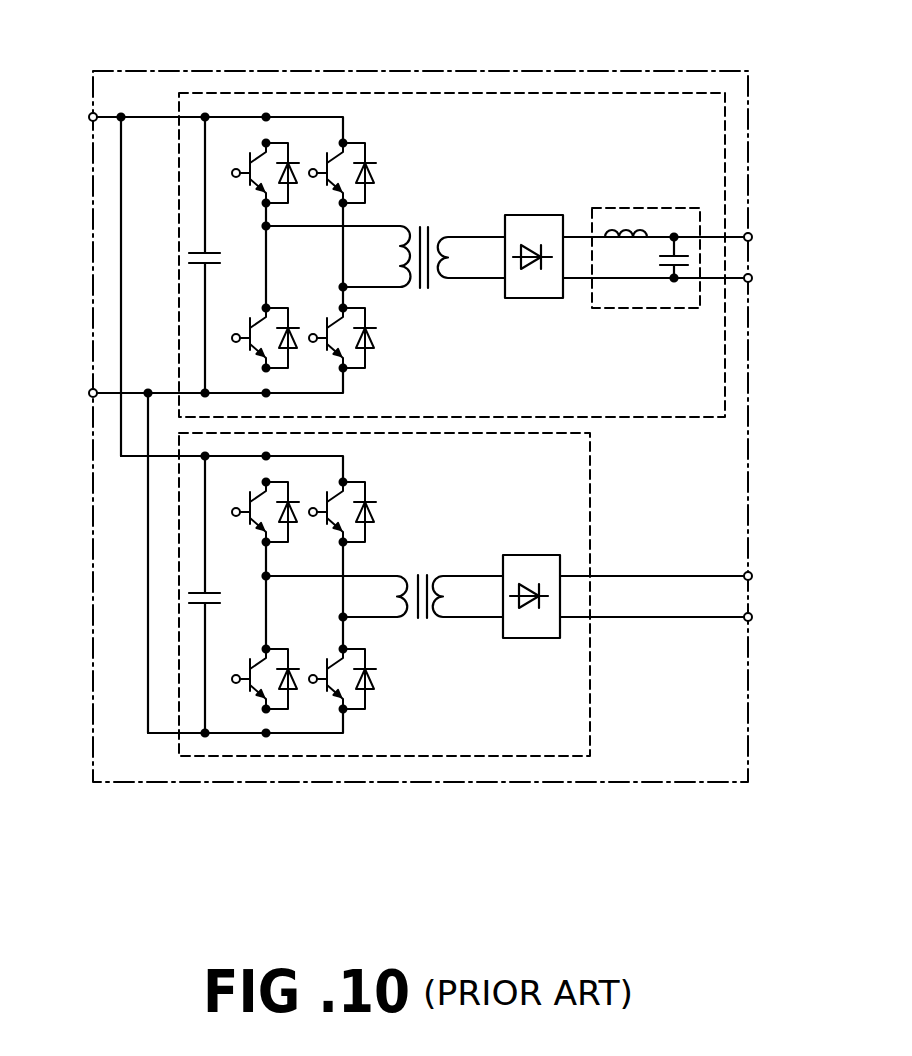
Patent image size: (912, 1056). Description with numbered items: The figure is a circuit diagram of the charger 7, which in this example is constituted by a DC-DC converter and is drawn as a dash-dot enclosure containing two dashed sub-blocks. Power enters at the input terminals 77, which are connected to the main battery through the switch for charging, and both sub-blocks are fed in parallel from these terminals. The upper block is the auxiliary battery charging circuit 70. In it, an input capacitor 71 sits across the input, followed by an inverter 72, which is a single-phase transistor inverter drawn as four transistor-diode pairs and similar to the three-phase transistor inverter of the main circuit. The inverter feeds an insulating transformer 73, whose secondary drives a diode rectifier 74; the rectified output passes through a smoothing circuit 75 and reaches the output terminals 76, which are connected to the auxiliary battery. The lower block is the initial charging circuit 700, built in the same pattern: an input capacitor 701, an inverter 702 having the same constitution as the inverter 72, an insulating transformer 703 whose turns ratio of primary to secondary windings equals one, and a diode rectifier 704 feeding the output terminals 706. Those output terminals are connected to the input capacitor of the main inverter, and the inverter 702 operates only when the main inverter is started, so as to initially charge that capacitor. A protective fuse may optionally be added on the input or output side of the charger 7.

The charger 7 is at (750, 135).
The auxiliary battery charging circuit 70 is at (725, 187).
The initial charging circuit 700 is at (590, 508).
The input capacitor 71 is at (219, 259).
The inverter 72 is at (295, 161).
The insulating transformer 73 is at (427, 227).
The diode rectifier 74 is at (533, 215).
The smoothing circuit 75 is at (693, 258).
The output terminals 76 is at (753, 278).
The input terminals 77 is at (89, 121).
The input capacitor 701 is at (218, 599).
The inverter 702 is at (321, 689).
The insulating transformer 703 is at (422, 620).
The diode rectifier 704 is at (523, 638).
The output terminals 706 is at (753, 617).